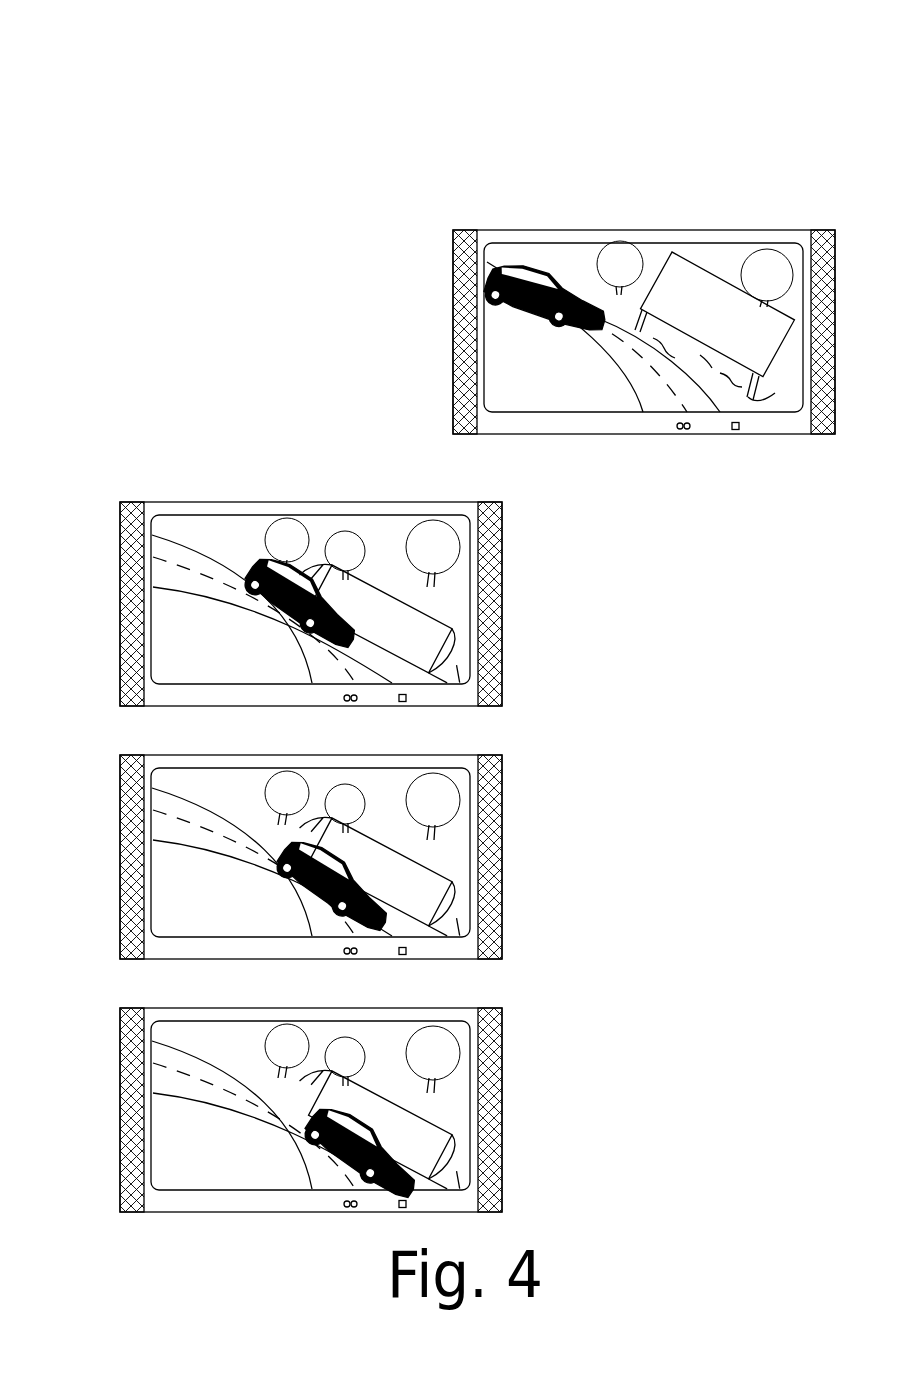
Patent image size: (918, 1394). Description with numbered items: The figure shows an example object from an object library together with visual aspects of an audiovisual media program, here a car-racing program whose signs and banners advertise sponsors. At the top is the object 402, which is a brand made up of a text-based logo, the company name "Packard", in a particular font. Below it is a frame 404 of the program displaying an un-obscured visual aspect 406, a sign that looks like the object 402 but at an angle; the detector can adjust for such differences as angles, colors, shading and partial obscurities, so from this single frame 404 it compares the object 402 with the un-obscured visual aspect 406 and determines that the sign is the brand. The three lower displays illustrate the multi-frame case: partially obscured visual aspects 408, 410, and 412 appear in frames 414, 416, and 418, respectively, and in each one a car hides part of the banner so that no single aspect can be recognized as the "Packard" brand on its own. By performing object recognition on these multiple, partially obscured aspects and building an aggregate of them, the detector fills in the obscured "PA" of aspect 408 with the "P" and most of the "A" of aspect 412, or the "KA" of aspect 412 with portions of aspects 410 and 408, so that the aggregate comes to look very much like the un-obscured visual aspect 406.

The object 402 is at (199, 44).
The frame 404 is at (508, 253).
The un-obscured visual aspect 406 is at (722, 276).
The partially obscured visual aspect 408 is at (434, 629).
The partially obscured visual aspect 410 is at (434, 882).
The partially obscured visual aspect 412 is at (434, 1135).
The frame 414 is at (175, 523).
The frame 416 is at (175, 776).
The frame 418 is at (175, 1029).